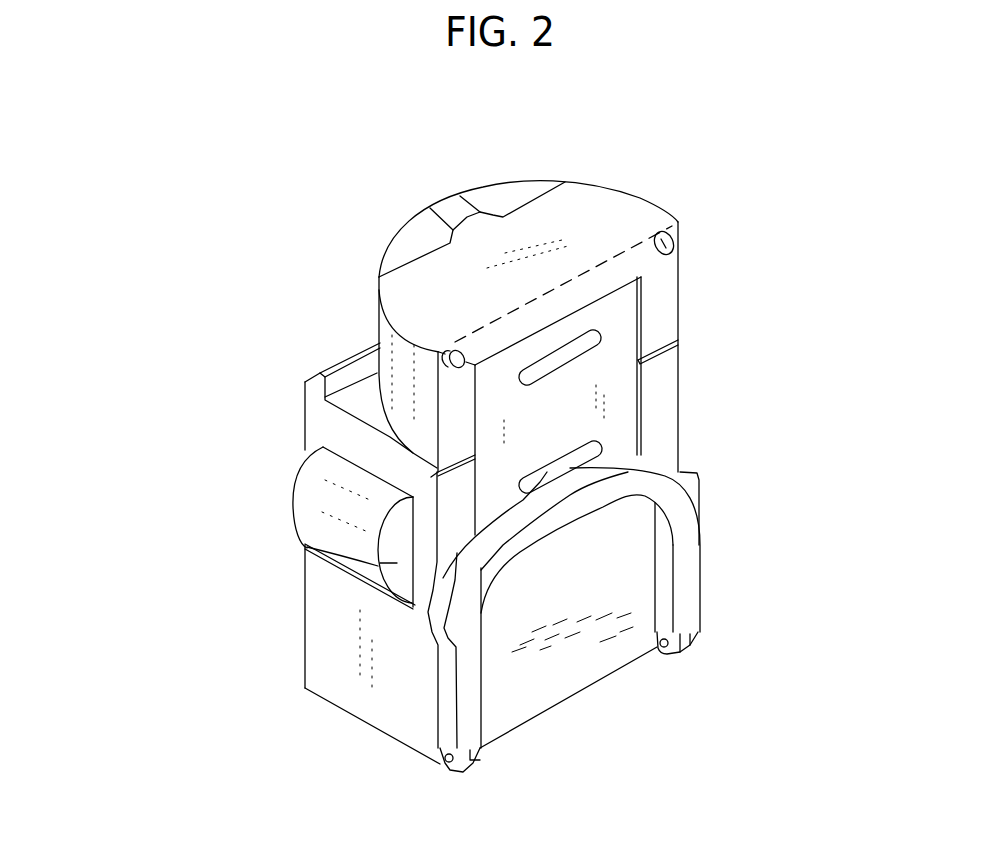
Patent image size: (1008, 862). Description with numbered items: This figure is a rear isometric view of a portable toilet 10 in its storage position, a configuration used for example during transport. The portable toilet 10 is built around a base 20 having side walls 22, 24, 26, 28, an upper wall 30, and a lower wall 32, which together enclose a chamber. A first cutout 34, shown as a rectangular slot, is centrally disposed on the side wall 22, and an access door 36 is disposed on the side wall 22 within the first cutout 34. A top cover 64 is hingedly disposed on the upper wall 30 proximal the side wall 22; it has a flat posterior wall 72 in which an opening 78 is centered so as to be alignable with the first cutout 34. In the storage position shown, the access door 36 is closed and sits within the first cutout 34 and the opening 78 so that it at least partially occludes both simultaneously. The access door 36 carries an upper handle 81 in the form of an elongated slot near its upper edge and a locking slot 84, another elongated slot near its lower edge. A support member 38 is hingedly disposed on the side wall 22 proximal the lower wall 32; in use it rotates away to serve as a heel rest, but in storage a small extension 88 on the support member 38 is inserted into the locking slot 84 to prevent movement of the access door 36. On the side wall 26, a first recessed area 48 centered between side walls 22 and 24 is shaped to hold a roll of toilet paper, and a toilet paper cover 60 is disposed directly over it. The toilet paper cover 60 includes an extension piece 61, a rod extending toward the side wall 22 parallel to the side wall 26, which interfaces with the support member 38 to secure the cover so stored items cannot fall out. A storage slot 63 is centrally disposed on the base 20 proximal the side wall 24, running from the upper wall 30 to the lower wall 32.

The portable toilet 10 is at (170, 261).
The base 20 is at (300, 689).
The side wall 22 is at (590, 662).
The side wall 24 is at (338, 372).
The side wall 26 is at (318, 593).
The side wall 28 is at (700, 473).
The upper wall 30 is at (353, 407).
The lower wall 32 is at (353, 717).
The first cutout 34 is at (640, 380).
The access door 36 is at (620, 347).
The support member 38 is at (688, 598).
The first recessed area 48 is at (305, 544).
The toilet paper cover 60 is at (296, 520).
The extension piece 61 is at (430, 615).
The storage slot 63 is at (370, 357).
The top cover 64 is at (682, 221).
The flat posterior wall 72 is at (660, 266).
The opening 78 is at (638, 316).
The upper handle 81 is at (530, 363).
The locking slot 84 is at (588, 452).
The small extension 88 is at (634, 495).